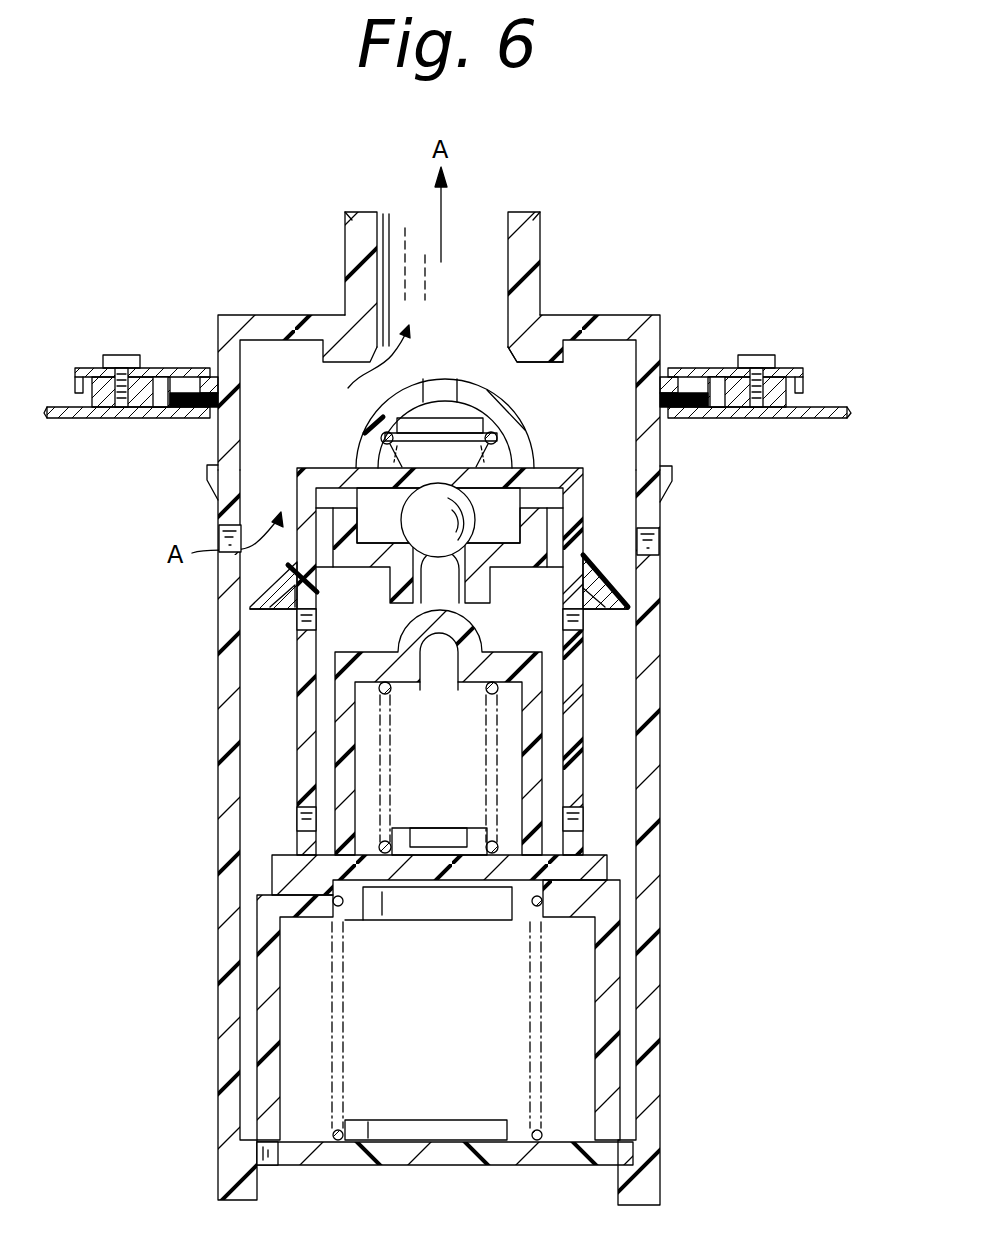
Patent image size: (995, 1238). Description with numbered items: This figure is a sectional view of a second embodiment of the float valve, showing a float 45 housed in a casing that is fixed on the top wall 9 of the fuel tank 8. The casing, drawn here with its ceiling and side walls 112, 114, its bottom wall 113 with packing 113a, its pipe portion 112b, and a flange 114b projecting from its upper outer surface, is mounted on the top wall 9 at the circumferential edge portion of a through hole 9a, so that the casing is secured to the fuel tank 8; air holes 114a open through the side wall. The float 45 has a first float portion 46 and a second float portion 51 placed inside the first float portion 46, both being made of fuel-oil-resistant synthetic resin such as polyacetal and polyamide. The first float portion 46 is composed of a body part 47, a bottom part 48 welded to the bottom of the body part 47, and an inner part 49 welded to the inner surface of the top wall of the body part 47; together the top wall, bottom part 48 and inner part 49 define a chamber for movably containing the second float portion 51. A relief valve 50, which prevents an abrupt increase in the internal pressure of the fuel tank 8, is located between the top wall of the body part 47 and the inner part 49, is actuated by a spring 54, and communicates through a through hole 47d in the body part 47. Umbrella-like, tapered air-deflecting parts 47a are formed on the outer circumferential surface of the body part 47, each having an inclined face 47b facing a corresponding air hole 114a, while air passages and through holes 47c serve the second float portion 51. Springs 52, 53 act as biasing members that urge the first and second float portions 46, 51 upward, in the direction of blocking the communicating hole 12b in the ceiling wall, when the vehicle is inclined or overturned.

The fuel tank 8 is at (830, 409).
The top wall 9 is at (811, 418).
The through hole 9a is at (667, 419).
The communicating hole 12b is at (506, 362).
The float 45 is at (588, 720).
The first float portion 46 is at (150, 667).
The body part 47 is at (300, 729).
The air-deflecting part 47a is at (272, 609).
The inclined face 47b is at (251, 606).
The air passages and through holes 47c is at (574, 617).
The through hole 47d is at (442, 384).
The bottom part 48 is at (266, 927).
The inner part 49 is at (357, 568).
The relief valve 50 is at (476, 524).
The second float portion 51 is at (543, 762).
The spring 52 is at (385, 1200).
The spring 53 is at (495, 858).
The spring 54 is at (381, 435).
The upper casing 112 is at (618, 328).
The pipe portion 112b is at (533, 243).
The bottom cap 113 is at (359, 1160).
The packing 113a is at (270, 1160).
The casing 114 is at (652, 855).
The groove 114a is at (234, 533).
The flange 114b is at (679, 394).